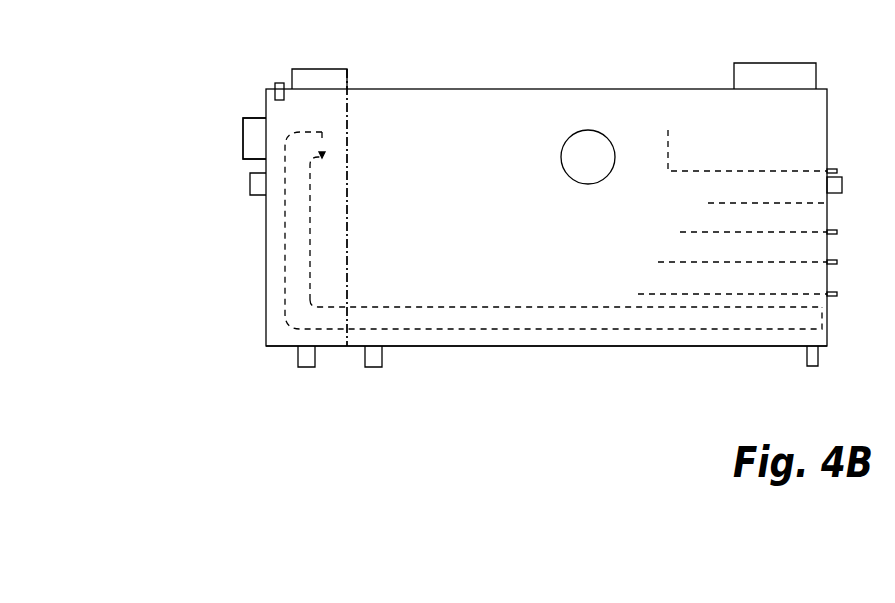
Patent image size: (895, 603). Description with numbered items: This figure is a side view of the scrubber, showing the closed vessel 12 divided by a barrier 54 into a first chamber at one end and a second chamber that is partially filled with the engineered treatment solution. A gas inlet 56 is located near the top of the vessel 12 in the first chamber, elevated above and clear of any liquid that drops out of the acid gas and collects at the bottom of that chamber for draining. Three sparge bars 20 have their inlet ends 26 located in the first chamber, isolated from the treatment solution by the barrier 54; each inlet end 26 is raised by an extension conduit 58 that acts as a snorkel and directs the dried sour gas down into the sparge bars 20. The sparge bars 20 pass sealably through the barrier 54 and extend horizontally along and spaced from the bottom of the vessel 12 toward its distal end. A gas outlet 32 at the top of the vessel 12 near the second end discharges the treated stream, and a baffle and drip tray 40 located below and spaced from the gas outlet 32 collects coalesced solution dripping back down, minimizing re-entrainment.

The vessel 12 is at (827, 131).
The sparge bar 20 is at (413, 323).
The inlet end 26 is at (322, 143).
The gas outlet 32 is at (733, 80).
The baffle and drip tray 40 is at (697, 170).
The barrier 54 is at (347, 262).
The gas inlet 56 is at (243, 142).
The extension conduit 58 is at (310, 210).